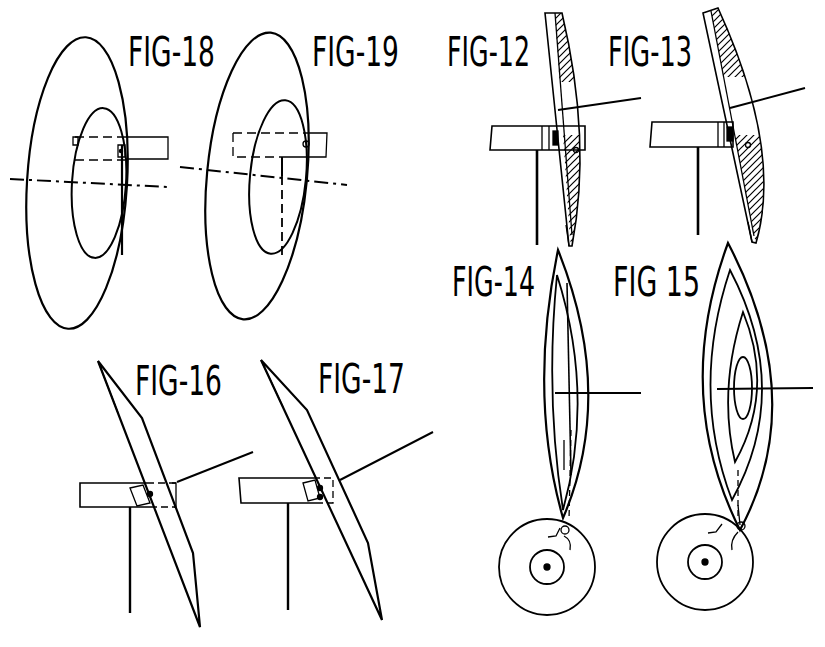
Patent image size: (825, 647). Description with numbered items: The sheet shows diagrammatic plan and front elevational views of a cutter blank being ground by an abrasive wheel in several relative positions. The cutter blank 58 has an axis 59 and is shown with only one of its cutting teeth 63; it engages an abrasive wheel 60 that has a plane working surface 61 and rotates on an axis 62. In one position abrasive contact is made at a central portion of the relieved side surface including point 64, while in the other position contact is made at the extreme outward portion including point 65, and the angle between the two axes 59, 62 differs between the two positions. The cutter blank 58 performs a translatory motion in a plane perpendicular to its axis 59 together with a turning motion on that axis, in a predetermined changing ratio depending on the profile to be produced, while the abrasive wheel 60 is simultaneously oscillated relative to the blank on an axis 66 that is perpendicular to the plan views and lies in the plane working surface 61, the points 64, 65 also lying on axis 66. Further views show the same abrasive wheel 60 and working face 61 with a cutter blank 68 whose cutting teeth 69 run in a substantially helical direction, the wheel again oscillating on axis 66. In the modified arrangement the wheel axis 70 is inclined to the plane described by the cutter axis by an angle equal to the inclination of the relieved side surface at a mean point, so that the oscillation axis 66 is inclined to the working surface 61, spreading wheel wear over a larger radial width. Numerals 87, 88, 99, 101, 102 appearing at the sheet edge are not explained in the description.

In FIG. 12, the cutter blank 58 is at (512, 136).
In FIG. 13, the cutter blank 58 is at (692, 131).
In FIG. 14, the cutter blank 58 is at (515, 538).
In FIG. 15, the cutter blank 58 is at (683, 530).
In FIG. 12, the axis 59 is at (536, 188).
In FIG. 13, the axis 59 is at (697, 180).
In FIG. 14, the axis 59 is at (545, 567).
In FIG. 15, the axis 59 is at (703, 562).
In FIG. 18, the abrasive wheel 60 is at (77, 183).
In FIG. 19, the abrasive wheel 60 is at (256, 176).
In FIG. 12, the abrasive wheel 60 is at (573, 65).
In FIG. 13, the abrasive wheel 60 is at (740, 48).
In FIG. 14, the abrasive wheel 60 is at (578, 350).
In FIG. 15, the abrasive wheel 60 is at (758, 345).
In FIG. 16, the abrasive wheel 60 is at (145, 437).
In FIG. 17, the abrasive wheel 60 is at (310, 440).
In FIG. 18, the plane working surface 61 is at (85, 284).
In FIG. 19, the plane working surface 61 is at (257, 282).
In FIG. 12, the plane working surface 61 is at (568, 241).
In FIG. 13, the plane working surface 61 is at (752, 232).
In FIG. 14, the plane working surface 61 is at (566, 520).
In FIG. 15, the plane working surface 61 is at (745, 521).
In FIG. 16, the plane working surface 61 is at (103, 372).
In FIG. 17, the plane working surface 61 is at (262, 372).
In FIG. 12, the axis 62 is at (617, 105).
In FIG. 13, the axis 62 is at (787, 97).
In FIG. 14, the axis 62 is at (627, 394).
In FIG. 15, the axis 62 is at (801, 391).
In FIG. 16, the axis 62 is at (215, 467).
In FIG. 17, the axis 62 is at (386, 456).
In FIG. 12, the cutting tooth 63 is at (546, 128).
In FIG. 13, the cutting tooth 63 is at (722, 127).
In FIG. 14, the cutting tooth 63 is at (548, 522).
In FIG. 15, the cutting tooth 63 is at (720, 526).
In FIG. 12, the point 64 is at (556, 148).
In FIG. 14, the point 64 is at (571, 530).
In FIG. 13, the point 65 is at (729, 145).
In FIG. 15, the point 65 is at (748, 528).
In FIG. 18, the axis 66 is at (127, 146).
In FIG. 19, the axis 66 is at (310, 141).
In FIG. 12, the axis 66 is at (577, 153).
In FIG. 13, the axis 66 is at (752, 148).
In FIG. 14, the axis 66 is at (562, 456).
In FIG. 15, the axis 66 is at (735, 464).
In FIG. 16, the axis 66 is at (150, 506).
In FIG. 17, the axis 66 is at (323, 505).
In FIG. 18, the cutter blank 68 is at (120, 148).
In FIG. 19, the cutter blank 68 is at (280, 145).
In FIG. 16, the cutter blank 68 is at (107, 492).
In FIG. 17, the cutter blank 68 is at (285, 490).
In FIG. 16, the cutting teeth 69 is at (140, 490).
In FIG. 17, the cutting teeth 69 is at (312, 485).
In FIG. 18, the axis 70 is at (153, 190).
In FIG. 19, the axis 70 is at (336, 187).
In FIG. 14, the element 87 is at (460, 641).
In FIG. 14, the element 88 is at (575, 640).
In FIG. 17, the element 88 is at (289, 639).
In FIG. 14, the element 99 is at (494, 638).
In FIG. 16, the element 99 is at (184, 639).
In FIG. 14, the element 101 is at (526, 638).
In FIG. 16, the element 101 is at (223, 639).
In FIG. 14, the element 102 is at (614, 640).
In FIG. 17, the element 102 is at (334, 639).